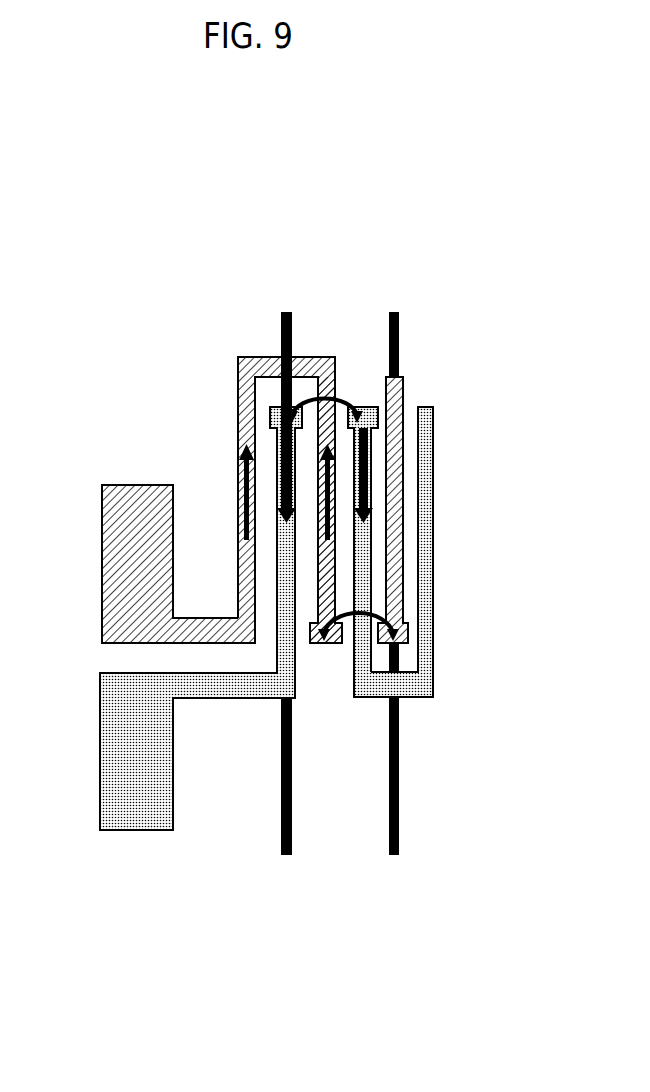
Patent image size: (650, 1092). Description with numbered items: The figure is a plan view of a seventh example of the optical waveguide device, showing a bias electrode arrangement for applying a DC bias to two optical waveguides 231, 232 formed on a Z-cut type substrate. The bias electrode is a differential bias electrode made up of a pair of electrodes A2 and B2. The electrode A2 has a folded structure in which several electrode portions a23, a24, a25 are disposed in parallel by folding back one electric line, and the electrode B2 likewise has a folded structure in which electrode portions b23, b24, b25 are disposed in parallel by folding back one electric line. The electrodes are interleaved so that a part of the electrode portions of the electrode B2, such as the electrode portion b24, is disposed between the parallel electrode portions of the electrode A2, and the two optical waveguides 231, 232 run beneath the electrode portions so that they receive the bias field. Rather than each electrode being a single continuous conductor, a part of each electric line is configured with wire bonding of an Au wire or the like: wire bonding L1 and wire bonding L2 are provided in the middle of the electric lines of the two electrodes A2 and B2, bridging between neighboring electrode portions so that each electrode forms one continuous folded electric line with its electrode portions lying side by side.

The electrode A2 is at (103, 480).
The electrode B2 is at (104, 838).
The electrode portion a23 is at (240, 396).
The electrode portion a24 is at (325, 383).
The electrode portion a25 is at (404, 386).
The electrode portion b23 is at (285, 575).
The electrode portion b24 is at (358, 545).
The electrode portion b25 is at (430, 490).
The wire bonding L1 is at (383, 606).
The wire bonding L2 is at (345, 396).
The optical waveguide 231 is at (281, 828).
The optical waveguide 232 is at (399, 828).